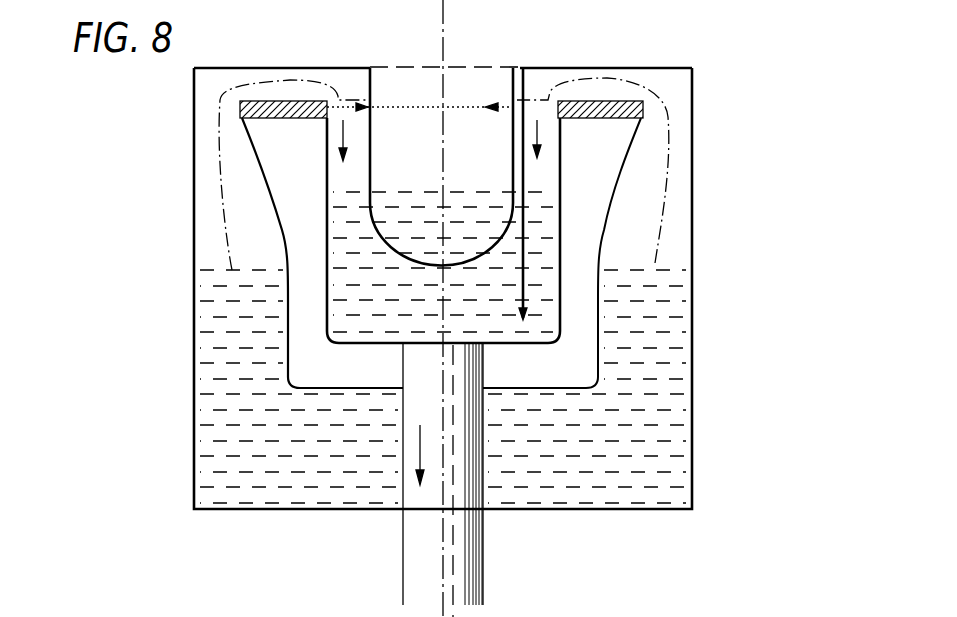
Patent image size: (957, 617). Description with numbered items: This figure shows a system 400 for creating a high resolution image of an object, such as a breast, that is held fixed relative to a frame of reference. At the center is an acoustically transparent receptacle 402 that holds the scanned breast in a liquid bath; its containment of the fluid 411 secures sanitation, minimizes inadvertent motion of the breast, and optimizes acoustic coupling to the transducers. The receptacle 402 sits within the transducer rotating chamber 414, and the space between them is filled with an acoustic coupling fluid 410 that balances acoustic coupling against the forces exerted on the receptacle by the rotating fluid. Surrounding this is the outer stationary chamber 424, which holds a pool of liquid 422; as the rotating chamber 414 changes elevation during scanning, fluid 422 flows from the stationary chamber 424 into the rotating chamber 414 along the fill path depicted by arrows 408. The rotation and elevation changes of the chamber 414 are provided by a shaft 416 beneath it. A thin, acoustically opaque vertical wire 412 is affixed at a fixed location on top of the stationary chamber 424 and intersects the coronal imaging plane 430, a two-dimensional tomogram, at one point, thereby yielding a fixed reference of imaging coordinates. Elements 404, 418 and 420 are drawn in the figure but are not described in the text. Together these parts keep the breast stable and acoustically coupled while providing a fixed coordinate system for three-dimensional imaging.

The system 400 is at (723, 101).
The acoustically transparent receptacle 402 is at (370, 150).
The housing top 404 is at (543, 66).
The arrows 408 is at (222, 213).
The acoustic coupling fluid 410 is at (358, 295).
The fluid 411 is at (398, 212).
The locator wire 412 is at (523, 291).
The rotating chamber 414 is at (597, 380).
The shaft 416 is at (403, 553).
The flow direction 418 is at (420, 447).
The drawn fiber 420 is at (463, 530).
The fluid 422 is at (265, 465).
The stationary chamber 424 is at (693, 422).
The coronal imaging plane 430 is at (447, 112).